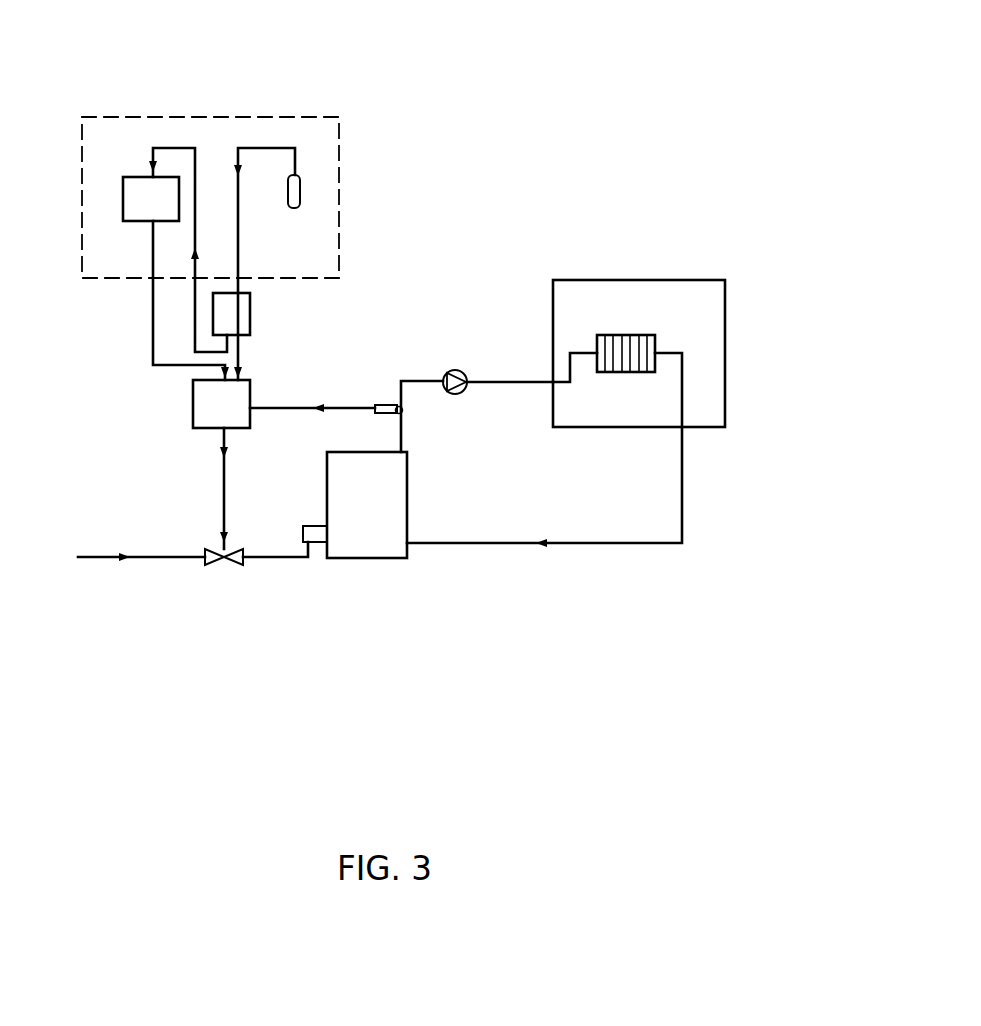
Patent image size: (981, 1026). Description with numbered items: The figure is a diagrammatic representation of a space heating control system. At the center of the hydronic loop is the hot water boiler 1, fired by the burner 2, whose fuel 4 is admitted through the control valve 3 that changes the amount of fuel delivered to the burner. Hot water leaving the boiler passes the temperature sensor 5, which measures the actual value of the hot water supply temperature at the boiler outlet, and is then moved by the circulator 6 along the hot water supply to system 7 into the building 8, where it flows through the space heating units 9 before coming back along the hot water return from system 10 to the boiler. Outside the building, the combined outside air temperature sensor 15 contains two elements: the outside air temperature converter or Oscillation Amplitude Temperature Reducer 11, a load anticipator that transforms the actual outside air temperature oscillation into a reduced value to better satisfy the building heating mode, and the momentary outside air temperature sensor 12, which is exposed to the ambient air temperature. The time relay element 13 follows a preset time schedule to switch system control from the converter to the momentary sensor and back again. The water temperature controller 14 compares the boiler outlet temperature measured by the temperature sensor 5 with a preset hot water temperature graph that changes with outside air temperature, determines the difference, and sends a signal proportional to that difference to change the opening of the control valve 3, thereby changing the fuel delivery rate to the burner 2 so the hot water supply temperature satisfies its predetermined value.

The hot water boiler 1 is at (516, 536).
The burner 2 is at (281, 524).
The control valve 3 is at (313, 523).
The fuel 4 is at (113, 585).
The temperature sensor 5 is at (414, 423).
The circulator 6 is at (477, 395).
The hot water supply to system 7 is at (477, 368).
The building 8 is at (725, 313).
The space heating units 9 is at (618, 342).
The hot water return from system 10 is at (686, 490).
The outside air temperature converter (Oscillation Amplitude Temperature Reducer) 11 is at (253, 198).
The momentary outside air temperature sensor 12 is at (433, 264).
The time relay element 13 is at (233, 309).
The water temperature controller 14 is at (210, 397).
The combined outside air temperature sensor 15 is at (342, 150).